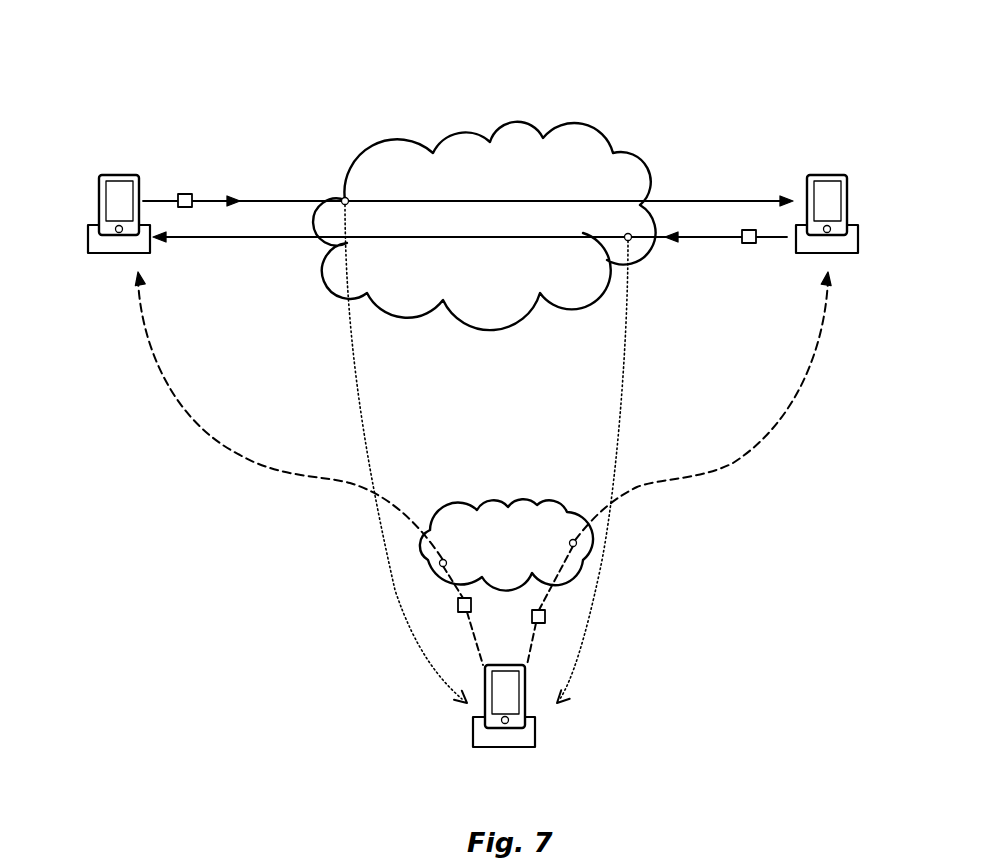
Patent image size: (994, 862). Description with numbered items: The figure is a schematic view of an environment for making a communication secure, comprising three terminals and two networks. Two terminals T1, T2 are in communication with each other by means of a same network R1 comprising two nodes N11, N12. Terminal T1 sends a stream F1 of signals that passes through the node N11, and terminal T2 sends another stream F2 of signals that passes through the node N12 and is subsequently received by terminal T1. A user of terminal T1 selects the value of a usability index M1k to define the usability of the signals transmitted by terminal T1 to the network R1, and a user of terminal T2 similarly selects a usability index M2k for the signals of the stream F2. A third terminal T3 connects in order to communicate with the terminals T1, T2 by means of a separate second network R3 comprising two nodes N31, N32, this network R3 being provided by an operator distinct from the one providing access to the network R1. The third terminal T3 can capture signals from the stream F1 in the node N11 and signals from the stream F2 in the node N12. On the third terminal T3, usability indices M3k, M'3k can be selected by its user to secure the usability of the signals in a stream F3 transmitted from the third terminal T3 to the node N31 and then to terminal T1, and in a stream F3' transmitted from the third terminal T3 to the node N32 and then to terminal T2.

The terminal T1 is at (108, 152).
The terminal T2 is at (845, 145).
The third terminal T3 is at (560, 740).
The stream F1 is at (165, 200).
The stream F2 is at (774, 236).
The stream F3 is at (390, 637).
The stream F3' is at (625, 642).
The usability index M1k is at (186, 193).
The usability index M2k is at (748, 245).
The usability index M3k is at (458, 604).
The usability index M'3k is at (588, 632).
The node N11 is at (344, 197).
The node N12 is at (627, 233).
The node N31 is at (440, 563).
The node N32 is at (577, 544).
The network R1 is at (486, 105).
The network R3 is at (460, 478).